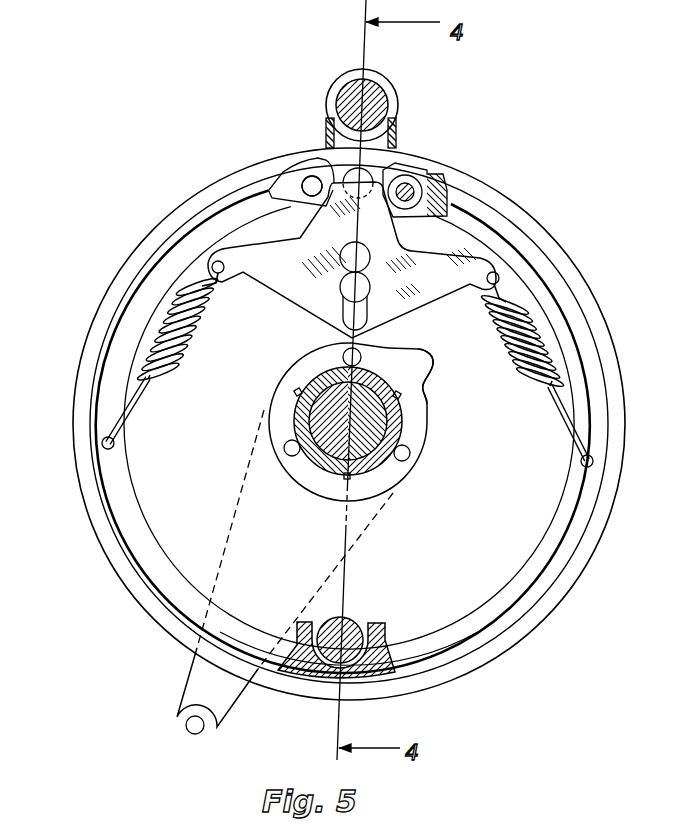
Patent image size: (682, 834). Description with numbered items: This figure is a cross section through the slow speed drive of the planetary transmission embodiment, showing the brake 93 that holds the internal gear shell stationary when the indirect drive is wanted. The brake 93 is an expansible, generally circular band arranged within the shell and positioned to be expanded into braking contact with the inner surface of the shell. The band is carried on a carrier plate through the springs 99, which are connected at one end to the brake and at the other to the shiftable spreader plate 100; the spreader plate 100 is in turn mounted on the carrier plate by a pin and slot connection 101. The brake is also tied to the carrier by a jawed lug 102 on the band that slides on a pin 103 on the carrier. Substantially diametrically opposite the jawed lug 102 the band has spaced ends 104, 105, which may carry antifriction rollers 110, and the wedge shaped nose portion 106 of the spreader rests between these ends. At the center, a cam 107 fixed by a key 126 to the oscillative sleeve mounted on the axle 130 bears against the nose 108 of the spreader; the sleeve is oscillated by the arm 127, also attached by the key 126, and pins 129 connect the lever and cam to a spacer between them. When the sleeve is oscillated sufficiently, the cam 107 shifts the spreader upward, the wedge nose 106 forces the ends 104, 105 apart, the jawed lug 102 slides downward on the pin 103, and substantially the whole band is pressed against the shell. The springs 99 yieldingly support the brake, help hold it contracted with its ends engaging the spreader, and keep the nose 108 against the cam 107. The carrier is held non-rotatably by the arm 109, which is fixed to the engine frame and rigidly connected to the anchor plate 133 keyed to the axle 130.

The brake 93 is at (505, 604).
The springs 99 is at (155, 303).
The spreader plate 100 is at (379, 299).
The pin and slot connection 101 is at (357, 287).
The jawed lug 102 is at (380, 634).
The pin 103 is at (341, 656).
The brake end 104 is at (308, 172).
The brake end 105 is at (418, 162).
The wedge shaped nose portion 106 is at (357, 194).
The cam 107 is at (423, 362).
The nose 108 is at (350, 329).
The arm 109 is at (350, 100).
The antifriction rollers 110 is at (330, 196).
The key 126 is at (398, 394).
The arm 127 is at (285, 572).
The pins 129 is at (407, 458).
The axle 130 is at (378, 430).
The anchor plate 133 is at (392, 138).